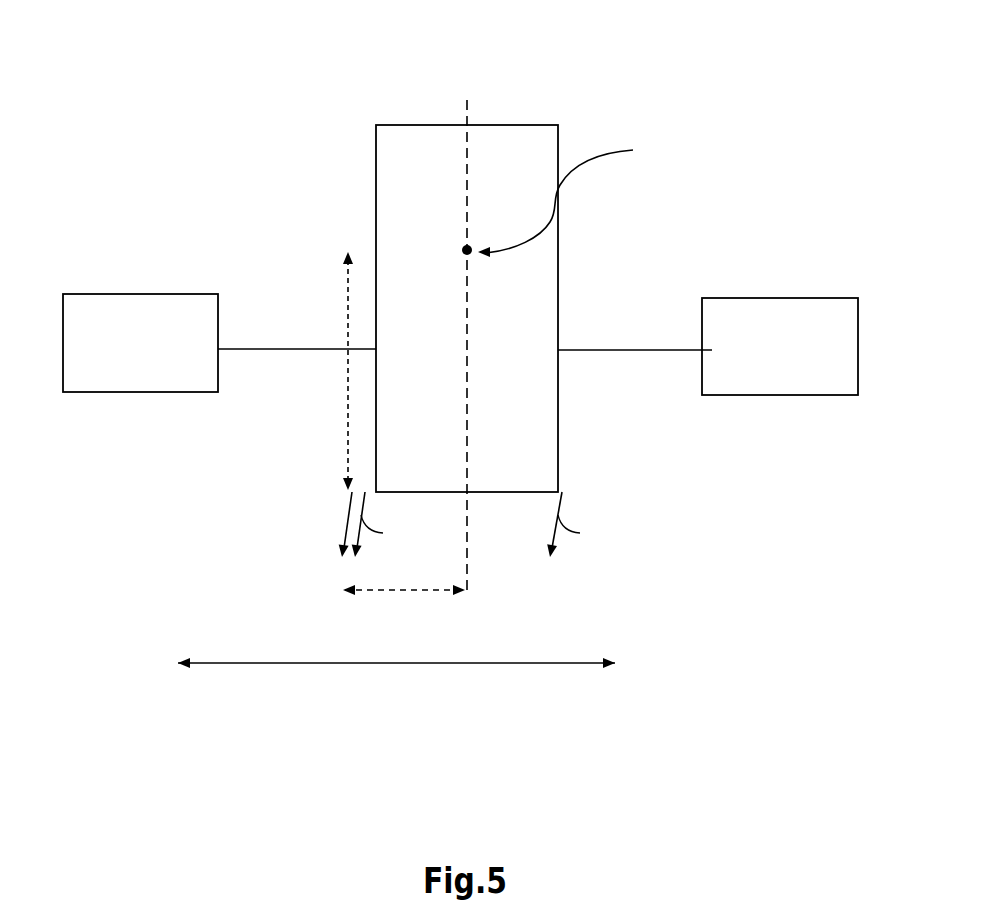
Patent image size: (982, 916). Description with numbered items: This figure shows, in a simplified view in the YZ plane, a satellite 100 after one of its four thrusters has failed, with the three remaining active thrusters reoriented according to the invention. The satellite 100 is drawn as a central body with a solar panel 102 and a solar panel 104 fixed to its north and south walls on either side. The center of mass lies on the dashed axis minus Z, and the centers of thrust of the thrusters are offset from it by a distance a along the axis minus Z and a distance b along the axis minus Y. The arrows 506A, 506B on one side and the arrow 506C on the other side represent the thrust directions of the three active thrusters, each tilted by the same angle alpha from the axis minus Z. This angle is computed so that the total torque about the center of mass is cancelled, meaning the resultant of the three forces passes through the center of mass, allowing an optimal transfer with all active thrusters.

The satellite 100 is at (304, 30).
The solar panel 102 is at (160, 288).
The solar panel 104 is at (766, 290).
The thrust direction arrow 506A is at (322, 529).
The thrust direction arrow 506B is at (254, 526).
The thrust direction arrow 506C is at (697, 520).